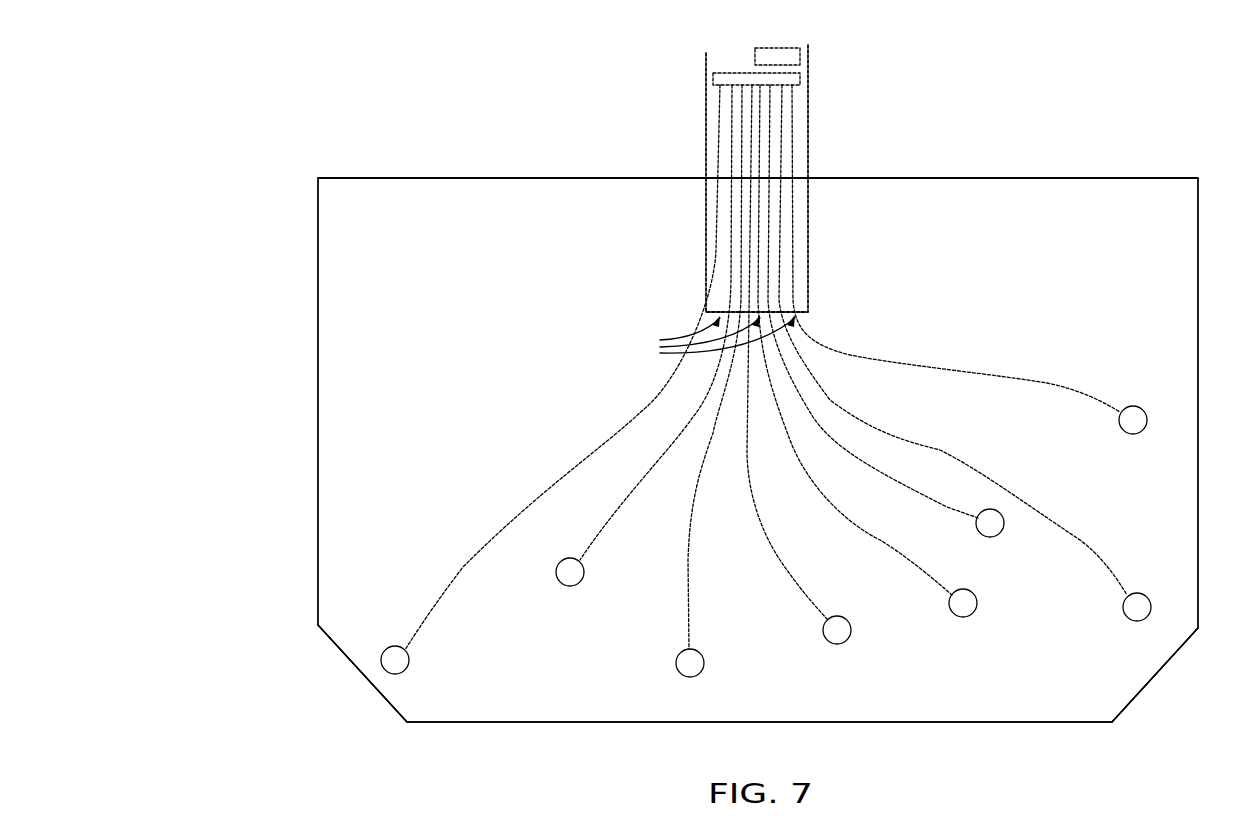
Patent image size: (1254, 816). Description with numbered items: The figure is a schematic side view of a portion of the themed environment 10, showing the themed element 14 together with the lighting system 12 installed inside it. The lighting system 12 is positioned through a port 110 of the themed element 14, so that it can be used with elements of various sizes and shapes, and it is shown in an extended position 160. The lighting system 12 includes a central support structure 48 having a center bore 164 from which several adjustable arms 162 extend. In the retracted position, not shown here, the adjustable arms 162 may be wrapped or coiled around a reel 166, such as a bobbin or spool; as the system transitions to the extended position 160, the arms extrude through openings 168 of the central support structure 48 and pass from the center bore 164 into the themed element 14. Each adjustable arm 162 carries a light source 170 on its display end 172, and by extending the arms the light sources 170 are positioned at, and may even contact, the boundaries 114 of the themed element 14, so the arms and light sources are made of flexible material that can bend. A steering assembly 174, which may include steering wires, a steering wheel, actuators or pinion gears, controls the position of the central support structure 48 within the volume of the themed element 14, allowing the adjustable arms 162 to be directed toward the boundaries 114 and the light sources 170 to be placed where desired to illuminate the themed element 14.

The themed environment 10 is at (170, 205).
The lighting system 12 is at (512, 283).
The themed element 14 is at (340, 178).
The central support structure 48 is at (706, 138).
The port 110 is at (815, 167).
The boundaries 114 is at (360, 676).
The extended position 160 is at (345, 122).
The adjustable arms 162 is at (878, 470).
The center bore 164 is at (797, 234).
The reel 166 is at (727, 63).
The openings 168 is at (706, 339).
The light sources 170 is at (822, 633).
The display end 172 is at (518, 466).
The steering assembly 174 is at (809, 57).